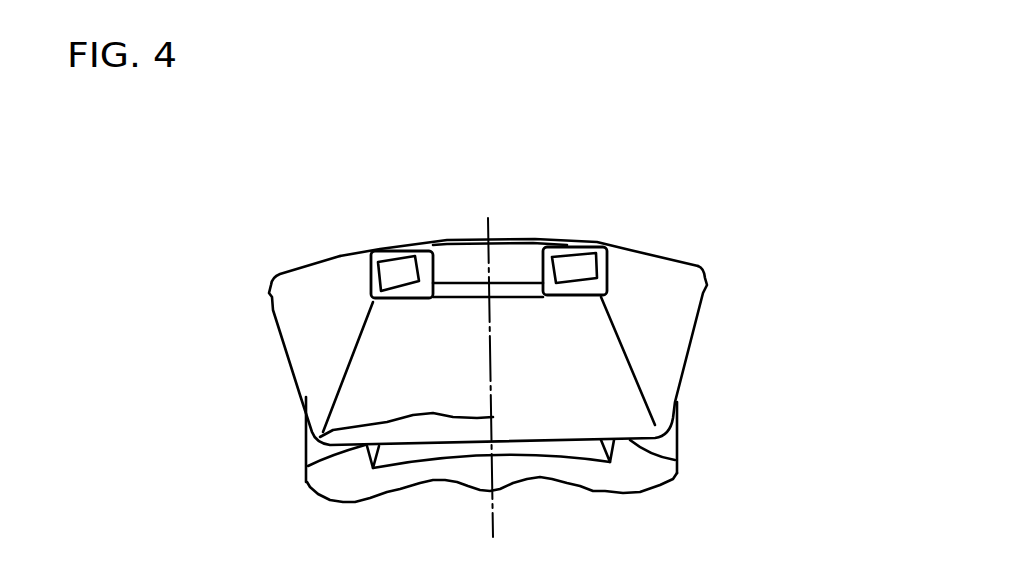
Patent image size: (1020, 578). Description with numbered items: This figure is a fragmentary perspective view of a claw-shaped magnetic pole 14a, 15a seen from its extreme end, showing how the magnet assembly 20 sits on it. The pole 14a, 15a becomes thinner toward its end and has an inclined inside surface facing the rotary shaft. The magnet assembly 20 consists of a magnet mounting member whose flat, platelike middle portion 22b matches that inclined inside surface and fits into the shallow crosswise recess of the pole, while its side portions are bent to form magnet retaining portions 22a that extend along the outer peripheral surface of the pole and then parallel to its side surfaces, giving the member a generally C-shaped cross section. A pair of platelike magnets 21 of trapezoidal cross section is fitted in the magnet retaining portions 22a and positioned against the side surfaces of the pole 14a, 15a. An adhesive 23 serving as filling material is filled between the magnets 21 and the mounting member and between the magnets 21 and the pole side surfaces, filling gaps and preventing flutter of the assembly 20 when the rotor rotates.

The magnet assembly 20 is at (274, 213).
The magnet 21 is at (392, 272).
The magnet retaining portion 22a is at (312, 330).
The middle portion 22b is at (310, 436).
The adhesive 23 is at (422, 264).
The claw-shaped magnetic pole 14a is at (473, 256).
The claw-shaped magnetic pole 15a is at (473, 256).